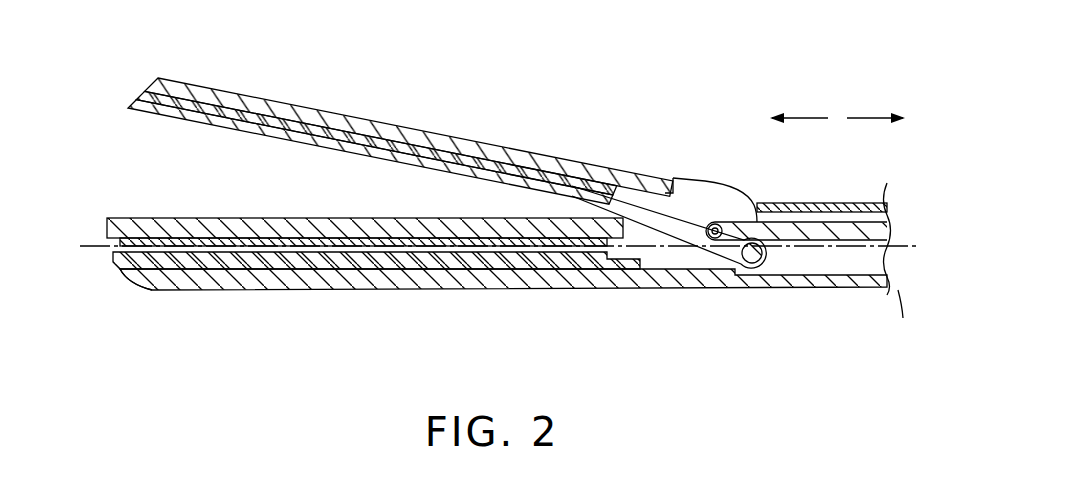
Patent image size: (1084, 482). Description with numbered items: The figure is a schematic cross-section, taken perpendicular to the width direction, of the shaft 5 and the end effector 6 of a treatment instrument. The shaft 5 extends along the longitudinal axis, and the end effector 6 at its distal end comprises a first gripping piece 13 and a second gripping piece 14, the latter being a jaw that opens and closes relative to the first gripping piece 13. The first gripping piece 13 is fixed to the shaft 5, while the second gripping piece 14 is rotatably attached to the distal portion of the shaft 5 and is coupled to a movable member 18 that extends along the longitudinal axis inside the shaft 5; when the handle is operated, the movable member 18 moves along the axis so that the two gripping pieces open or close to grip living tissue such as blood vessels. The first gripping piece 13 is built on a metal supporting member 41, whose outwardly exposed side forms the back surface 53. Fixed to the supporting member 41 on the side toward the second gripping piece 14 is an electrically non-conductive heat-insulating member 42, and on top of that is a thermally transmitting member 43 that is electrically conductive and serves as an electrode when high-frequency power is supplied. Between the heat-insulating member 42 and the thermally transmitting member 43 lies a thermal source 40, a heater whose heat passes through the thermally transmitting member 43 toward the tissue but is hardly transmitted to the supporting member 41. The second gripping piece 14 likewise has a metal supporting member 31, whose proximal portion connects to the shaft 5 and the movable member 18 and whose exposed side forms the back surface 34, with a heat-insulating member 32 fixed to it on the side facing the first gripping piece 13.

The end effector 6 is at (412, 56).
The second gripping piece 14 is at (420, 122).
The first gripping piece 13 is at (437, 292).
The supporting member 31 is at (468, 135).
The heat-insulating member 32 is at (314, 128).
The back surface 34 is at (340, 115).
The thermally transmitting member 43 is at (186, 224).
The thermal source 40 is at (240, 240).
The back surface 53 is at (250, 295).
The supporting member 41 is at (336, 296).
The heat-insulating member 42 is at (165, 292).
The movable member 18 is at (820, 228).
The shaft 5 is at (848, 200).